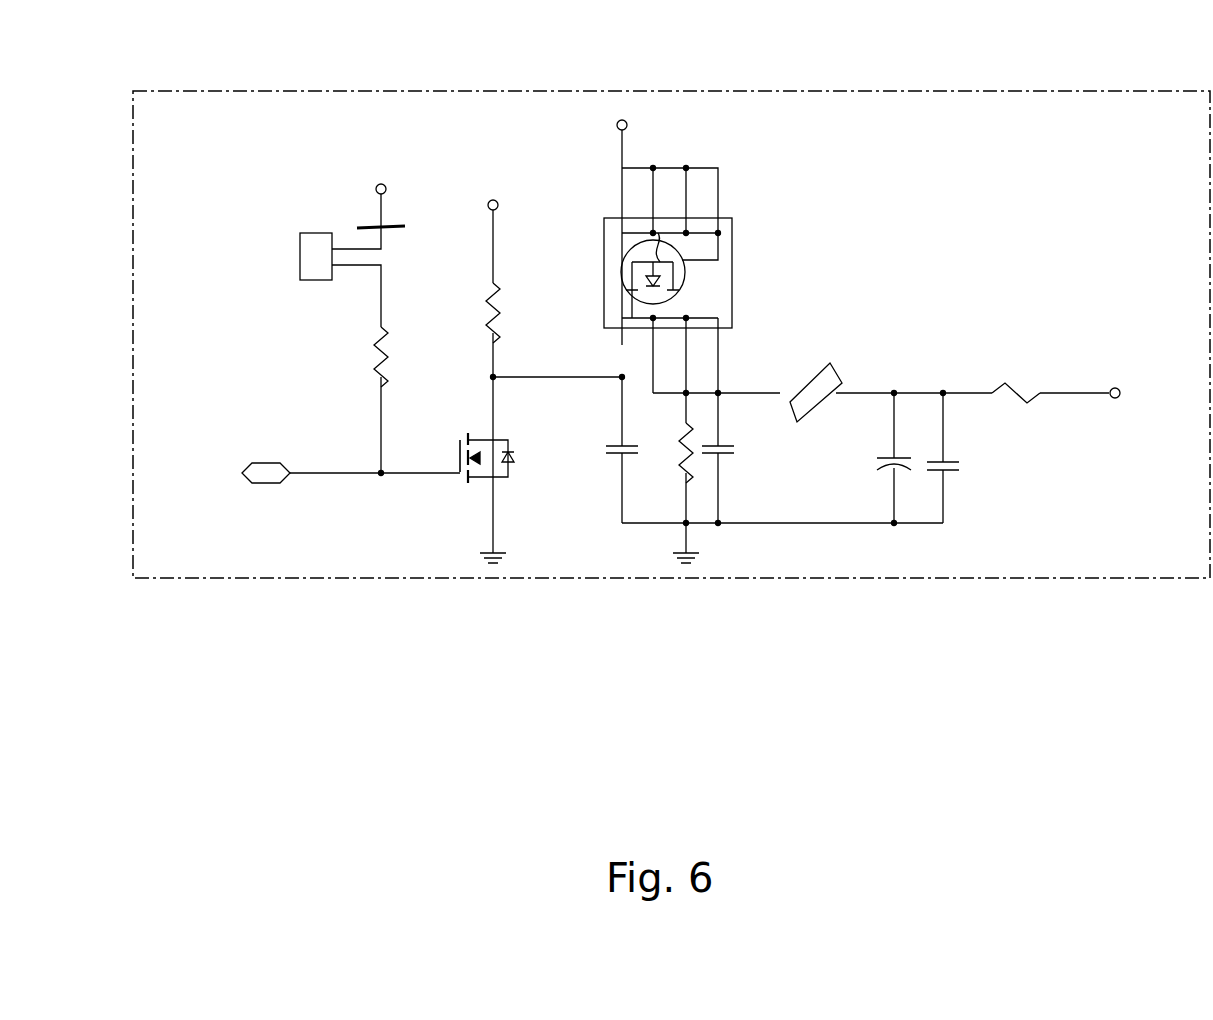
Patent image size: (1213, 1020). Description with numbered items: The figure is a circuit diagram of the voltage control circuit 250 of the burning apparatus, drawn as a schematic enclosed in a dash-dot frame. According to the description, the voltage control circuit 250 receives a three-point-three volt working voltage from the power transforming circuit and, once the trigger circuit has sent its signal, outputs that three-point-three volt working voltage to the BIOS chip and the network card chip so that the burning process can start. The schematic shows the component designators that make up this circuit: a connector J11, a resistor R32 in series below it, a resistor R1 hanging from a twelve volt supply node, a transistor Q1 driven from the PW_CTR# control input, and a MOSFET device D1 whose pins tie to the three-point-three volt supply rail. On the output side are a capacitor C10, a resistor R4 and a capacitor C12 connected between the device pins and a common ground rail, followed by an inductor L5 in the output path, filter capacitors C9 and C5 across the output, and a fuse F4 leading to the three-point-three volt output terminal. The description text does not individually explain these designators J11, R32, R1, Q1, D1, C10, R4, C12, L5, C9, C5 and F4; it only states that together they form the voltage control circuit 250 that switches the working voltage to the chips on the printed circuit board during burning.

The voltage control circuit 250 is at (950, 91).
The connector CON2 J11 is at (315, 246).
The resistor R32 is at (396, 357).
The resistor R1 is at (478, 303).
The transistor 2N7002 Q1 is at (478, 444).
The MOSFET IRF7201/SO D1 is at (683, 272).
The capacitor C10 is at (603, 450).
The resistor R4 is at (672, 453).
The capacitor C12 is at (719, 473).
The inductor L5 is at (816, 383).
The capacitor C9 is at (886, 458).
The capacitor C5 is at (950, 458).
The fuse F4 is at (1016, 385).